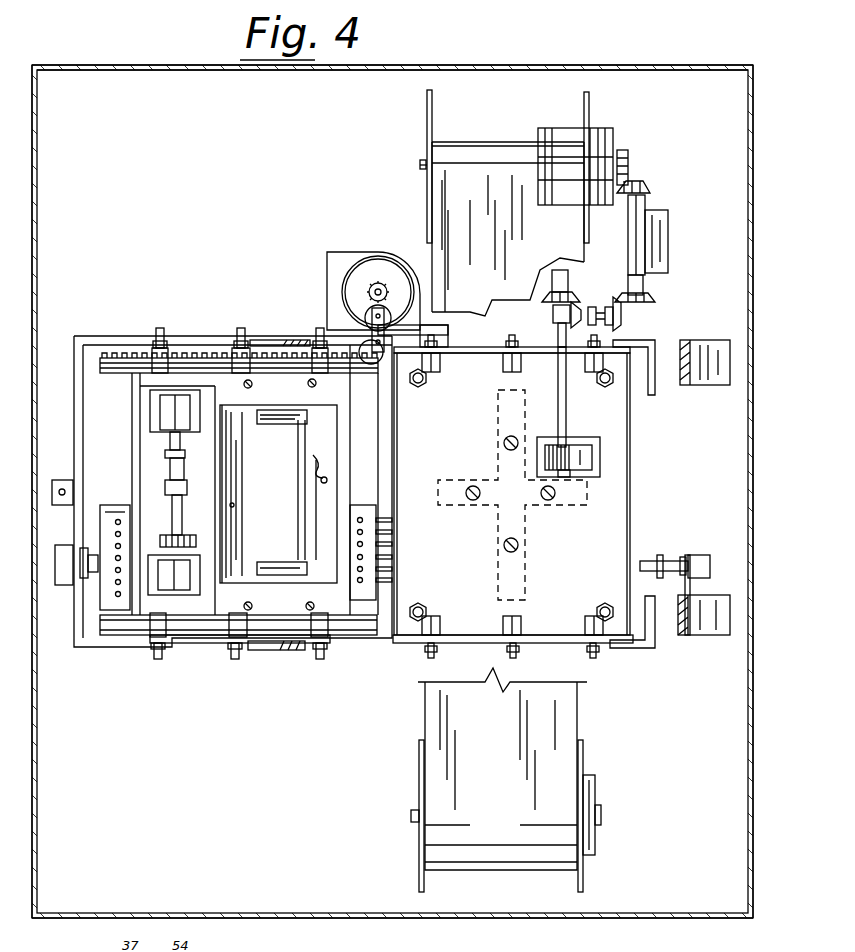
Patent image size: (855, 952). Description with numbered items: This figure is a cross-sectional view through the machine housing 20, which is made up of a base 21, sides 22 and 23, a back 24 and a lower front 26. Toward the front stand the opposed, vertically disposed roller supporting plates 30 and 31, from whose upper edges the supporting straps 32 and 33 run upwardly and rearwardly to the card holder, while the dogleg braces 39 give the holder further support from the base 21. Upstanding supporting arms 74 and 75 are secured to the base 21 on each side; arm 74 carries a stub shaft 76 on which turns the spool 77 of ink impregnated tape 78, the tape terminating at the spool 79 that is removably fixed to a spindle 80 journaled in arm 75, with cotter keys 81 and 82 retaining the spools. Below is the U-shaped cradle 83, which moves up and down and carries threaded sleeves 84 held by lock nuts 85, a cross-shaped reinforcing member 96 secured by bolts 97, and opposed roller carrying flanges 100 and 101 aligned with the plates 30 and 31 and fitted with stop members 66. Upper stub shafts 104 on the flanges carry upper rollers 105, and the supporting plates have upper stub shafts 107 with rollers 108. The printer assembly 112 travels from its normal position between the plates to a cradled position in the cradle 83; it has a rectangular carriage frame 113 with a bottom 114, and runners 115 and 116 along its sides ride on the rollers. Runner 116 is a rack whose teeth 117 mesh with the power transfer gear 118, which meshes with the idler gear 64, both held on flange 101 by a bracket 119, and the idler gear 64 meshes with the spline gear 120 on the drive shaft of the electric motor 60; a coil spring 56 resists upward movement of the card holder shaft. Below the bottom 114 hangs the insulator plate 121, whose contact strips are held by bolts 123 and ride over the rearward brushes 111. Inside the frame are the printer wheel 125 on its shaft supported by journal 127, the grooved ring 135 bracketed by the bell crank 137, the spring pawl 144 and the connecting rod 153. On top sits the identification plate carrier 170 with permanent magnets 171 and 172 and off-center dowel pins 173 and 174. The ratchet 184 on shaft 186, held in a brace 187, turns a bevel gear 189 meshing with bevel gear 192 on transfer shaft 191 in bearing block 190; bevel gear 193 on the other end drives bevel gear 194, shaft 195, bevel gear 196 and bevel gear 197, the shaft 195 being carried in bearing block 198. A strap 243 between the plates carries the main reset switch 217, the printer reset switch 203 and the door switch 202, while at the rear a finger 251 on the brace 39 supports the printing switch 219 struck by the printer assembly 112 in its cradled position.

The housing 20 is at (608, 918).
The base 21 is at (126, 70).
The side 22 is at (440, 918).
The side 23 is at (482, 68).
The back 24 is at (749, 438).
The lower front 26 is at (37, 272).
The roller supporting plate 30 is at (208, 643).
The roller supporting plate 31 is at (190, 346).
The supporting strap 32 is at (280, 650).
The supporting strap 33 is at (274, 340).
The dogleg brace 39 is at (697, 348).
The coil spring 56 is at (432, 258).
The electric motor 60 is at (372, 259).
The idler gear 64 is at (388, 318).
The stop member 66 is at (656, 388).
The supporting arm 74 is at (590, 794).
The supporting arm 75 is at (605, 136).
The stub shaft 76 is at (414, 814).
The spool 77 is at (582, 756).
The ink impregnated tape 78 is at (576, 719).
The spool 79 is at (432, 112).
The spindle 80 is at (422, 162).
The cotter key 81 is at (416, 818).
The cotter key 82 is at (420, 167).
The cradle 83 is at (632, 490).
The sleeve 84 is at (415, 384).
The lock nut 85 is at (426, 382).
The cross-shaped reinforcing member 96 is at (530, 514).
The bolt 97 is at (504, 545).
The roller carrying flange 100 is at (568, 645).
The roller carrying flange 101 is at (492, 354).
The upper stub shaft 104 is at (526, 334).
The upper roller 105 is at (440, 372).
The upper stub shaft 107 is at (162, 328).
The roller 108 is at (164, 372).
The brush 111 is at (394, 546).
The printer assembly 112 is at (350, 462).
The carriage frame 113 is at (132, 418).
The bottom 114 is at (140, 448).
The runner 115 is at (361, 630).
The runner 116 is at (126, 345).
The teeth 117 is at (325, 384).
The power transfer gear 118 is at (361, 352).
The bracket 119 is at (445, 336).
The spline gear 120 is at (386, 286).
The insulator plate 121 is at (114, 506).
The bolt 123 is at (380, 500).
The printer wheel 125 is at (166, 540).
The journal 127 is at (246, 385).
The concentric ring 135 is at (170, 450).
The bell crank 137 is at (220, 444).
The spring pawl 144 is at (166, 503).
The connecting rod 153 is at (206, 520).
The identification plate carrier 170 is at (345, 407).
The permanent magnet 171 is at (284, 560).
The permanent magnet 172 is at (284, 424).
The dowel pin 173 is at (232, 505).
The dowel pin 174 is at (319, 463).
The ratchet 184 is at (572, 446).
The shaft 186 is at (566, 404).
The brace 187 is at (593, 458).
The bevel gear 189 is at (566, 298).
The bearing block 190 is at (554, 324).
The transfer shaft 191 is at (564, 328).
The bevel gear 192 is at (582, 312).
The bevel gear 193 is at (613, 320).
The bevel gear 194 is at (650, 301).
The shaft 195 is at (645, 210).
The bevel gear 196 is at (648, 185).
The bevel gear 197 is at (628, 165).
The bearing block 198 is at (658, 250).
The door switch 202 is at (62, 478).
The printer reset switch 203 is at (62, 546).
The main reset switch 217 is at (72, 586).
The printing switch 219 is at (698, 556).
The strap 243 is at (106, 648).
The finger 251 is at (685, 582).